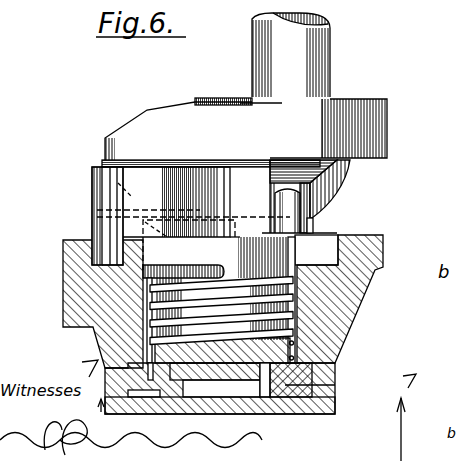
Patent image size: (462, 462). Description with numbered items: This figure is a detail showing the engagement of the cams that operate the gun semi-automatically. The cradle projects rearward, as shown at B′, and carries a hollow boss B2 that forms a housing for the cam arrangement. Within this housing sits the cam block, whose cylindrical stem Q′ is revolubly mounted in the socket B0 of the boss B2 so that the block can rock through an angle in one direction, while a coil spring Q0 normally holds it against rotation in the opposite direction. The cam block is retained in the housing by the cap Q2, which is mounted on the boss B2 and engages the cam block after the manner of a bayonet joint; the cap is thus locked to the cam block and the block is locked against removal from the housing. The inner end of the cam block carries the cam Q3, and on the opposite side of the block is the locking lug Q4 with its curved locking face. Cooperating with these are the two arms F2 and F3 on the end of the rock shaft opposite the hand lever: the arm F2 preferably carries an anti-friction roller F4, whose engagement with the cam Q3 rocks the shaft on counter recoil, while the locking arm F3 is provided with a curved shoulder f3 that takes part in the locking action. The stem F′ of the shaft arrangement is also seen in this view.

The stem F′ is at (362, 56).
The arm F2 is at (178, 127).
The cam Q3 is at (99, 162).
The anti-friction roller F4 is at (57, 184).
The curved shoulder f3 is at (272, 229).
The locking arm F3 is at (332, 183).
The locking lug Q4 is at (313, 222).
The rearward projection of the cradle B′ is at (38, 258).
The housing (hollow boss) B2 is at (345, 298).
The socket B0 is at (298, 318).
The cap Q2 is at (396, 385).
The coil spring Q0 is at (143, 302).
The cylindrical stem Q′ is at (289, 417).